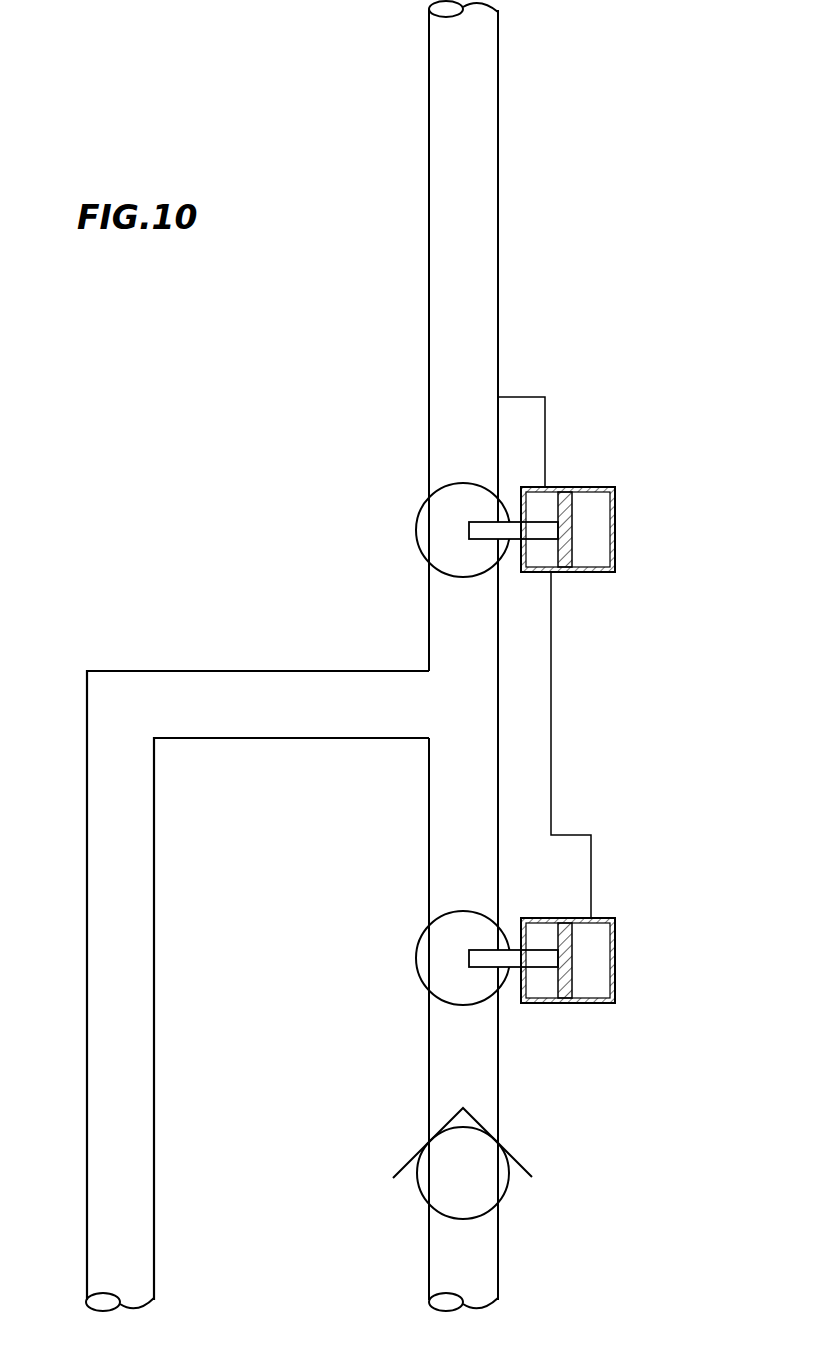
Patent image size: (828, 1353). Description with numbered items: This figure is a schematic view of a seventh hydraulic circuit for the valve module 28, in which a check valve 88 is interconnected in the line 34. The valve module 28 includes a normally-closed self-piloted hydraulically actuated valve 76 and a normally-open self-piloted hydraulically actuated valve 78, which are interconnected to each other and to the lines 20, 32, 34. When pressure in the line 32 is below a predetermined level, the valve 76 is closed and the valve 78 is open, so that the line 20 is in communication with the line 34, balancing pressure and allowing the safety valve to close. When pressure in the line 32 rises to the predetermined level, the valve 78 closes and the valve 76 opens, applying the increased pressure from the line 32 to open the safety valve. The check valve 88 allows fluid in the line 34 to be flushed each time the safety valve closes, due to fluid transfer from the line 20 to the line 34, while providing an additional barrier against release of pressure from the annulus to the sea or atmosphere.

The line 20 is at (154, 950).
The valve module 28 is at (657, 101).
The line 32 is at (498, 117).
The line 34 is at (498, 1075).
The normally-closed self-piloted hydraulically actuated valve 76 is at (615, 527).
The normally-open self-piloted hydraulically actuated valve 78 is at (615, 947).
The check valve 88 is at (428, 1148).